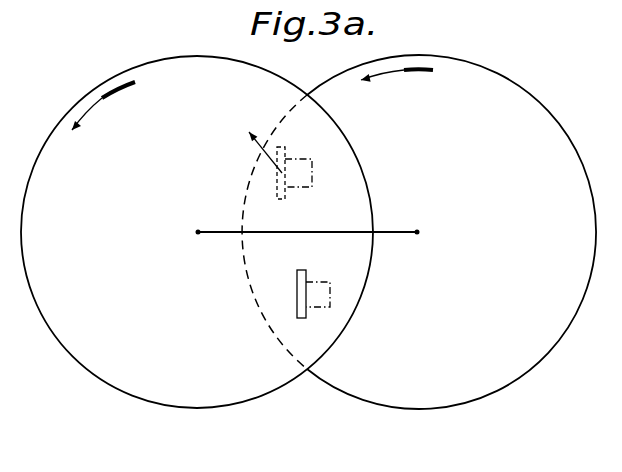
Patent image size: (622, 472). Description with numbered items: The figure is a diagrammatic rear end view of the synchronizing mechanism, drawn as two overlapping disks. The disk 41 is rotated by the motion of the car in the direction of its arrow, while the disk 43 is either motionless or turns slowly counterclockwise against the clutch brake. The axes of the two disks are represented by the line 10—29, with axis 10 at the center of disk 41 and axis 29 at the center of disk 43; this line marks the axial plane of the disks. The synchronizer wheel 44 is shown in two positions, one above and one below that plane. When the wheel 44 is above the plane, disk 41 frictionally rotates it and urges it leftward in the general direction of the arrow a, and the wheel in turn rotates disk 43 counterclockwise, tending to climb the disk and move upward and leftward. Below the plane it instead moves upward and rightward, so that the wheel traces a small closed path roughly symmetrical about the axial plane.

The axis of disk 41 10 is at (198, 231).
The axis of disk 43 29 is at (418, 231).
The disk 41 is at (113, 81).
The disk 43 is at (534, 111).
The synchronizer wheel 44 is at (286, 155).
The arrow a is at (259, 141).